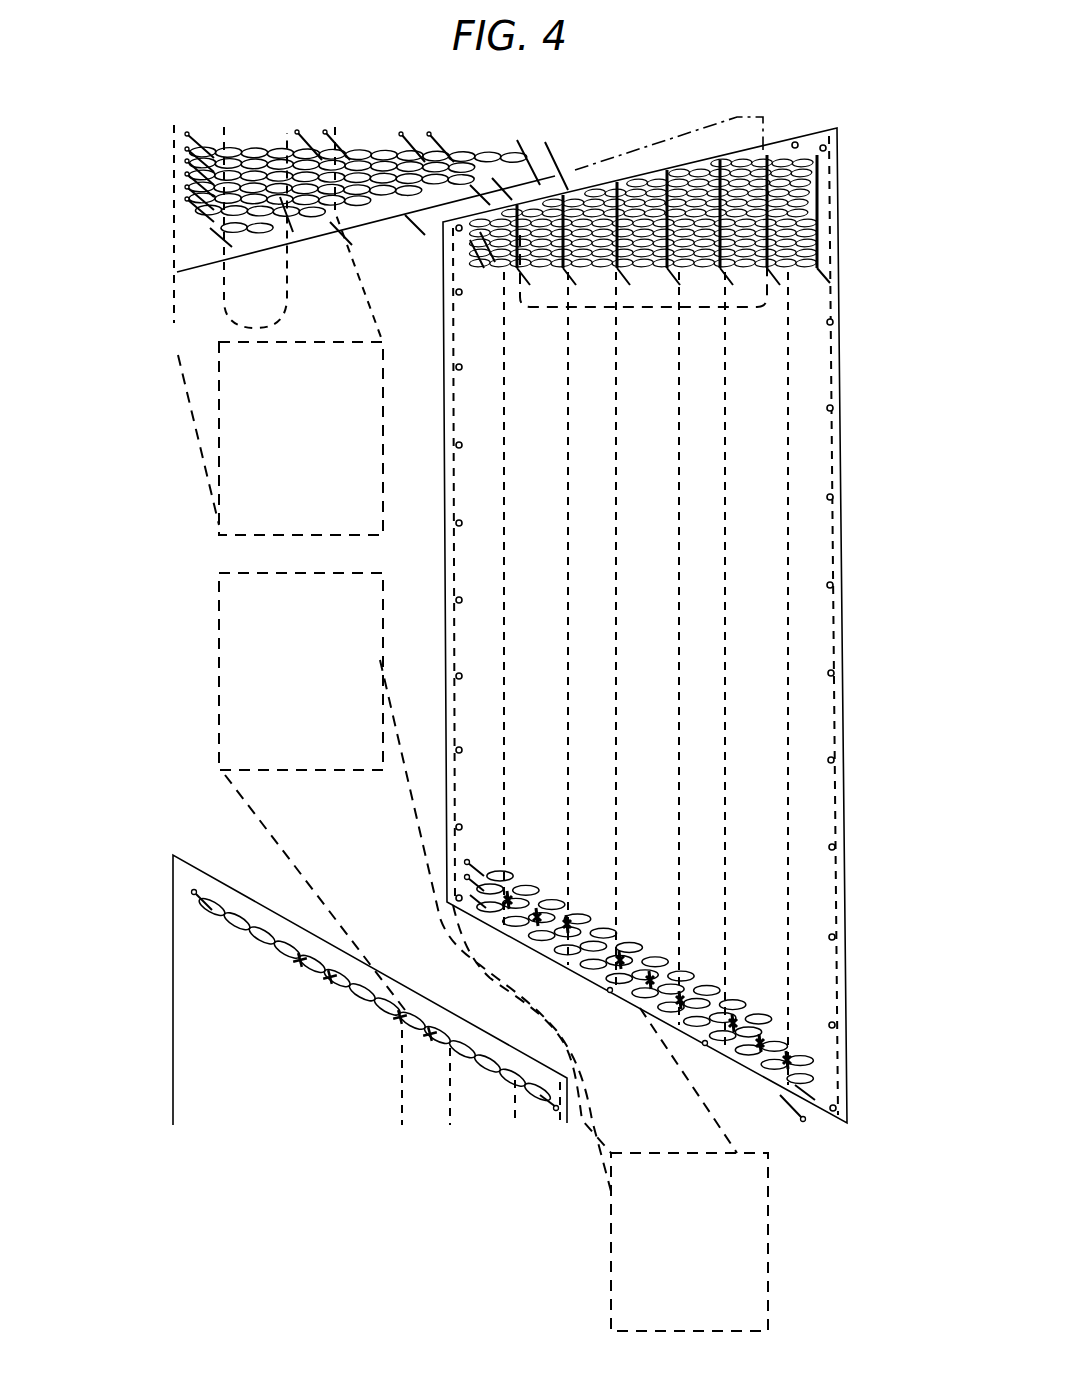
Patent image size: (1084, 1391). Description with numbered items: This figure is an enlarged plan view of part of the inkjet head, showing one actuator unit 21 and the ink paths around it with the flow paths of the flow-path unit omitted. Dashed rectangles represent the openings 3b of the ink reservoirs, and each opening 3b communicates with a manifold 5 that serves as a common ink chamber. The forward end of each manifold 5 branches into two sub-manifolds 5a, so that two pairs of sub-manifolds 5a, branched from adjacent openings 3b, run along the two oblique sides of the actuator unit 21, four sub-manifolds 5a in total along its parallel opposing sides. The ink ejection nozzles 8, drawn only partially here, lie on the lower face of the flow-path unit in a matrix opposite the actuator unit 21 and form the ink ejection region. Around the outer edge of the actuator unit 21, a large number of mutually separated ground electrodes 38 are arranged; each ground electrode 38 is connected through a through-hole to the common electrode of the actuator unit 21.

The actuator unit 21 is at (191, 914).
The manifold 5 is at (318, 860).
The sub-manifold 5a is at (181, 343).
The opening 3b is at (268, 528).
The ink ejection nozzle 8 is at (612, 228).
The ground electrode 38 is at (833, 497).